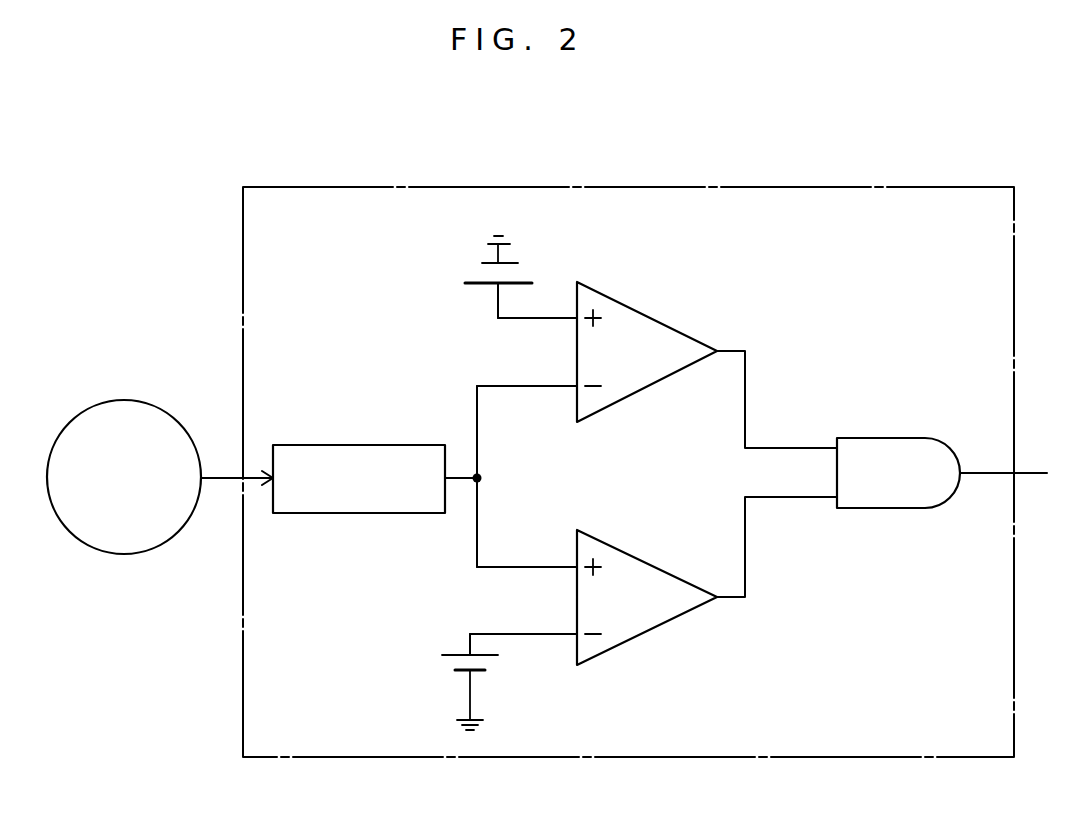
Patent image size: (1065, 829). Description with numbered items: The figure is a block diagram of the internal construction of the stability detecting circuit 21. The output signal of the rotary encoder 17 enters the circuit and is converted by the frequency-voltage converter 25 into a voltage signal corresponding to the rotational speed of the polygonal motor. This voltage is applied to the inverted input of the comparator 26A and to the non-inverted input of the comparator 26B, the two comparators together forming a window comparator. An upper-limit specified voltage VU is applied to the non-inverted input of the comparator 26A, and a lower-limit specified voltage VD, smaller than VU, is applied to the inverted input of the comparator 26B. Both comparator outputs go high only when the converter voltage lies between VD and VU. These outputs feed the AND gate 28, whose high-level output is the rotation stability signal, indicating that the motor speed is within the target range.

The rotary encoder 17 is at (135, 403).
The stability detecting circuit 21 is at (587, 185).
The frequency-voltage (F-V) converter 25 is at (320, 507).
The comparator 26A is at (637, 325).
The comparator 26B is at (615, 562).
The AND gate 28 is at (887, 448).